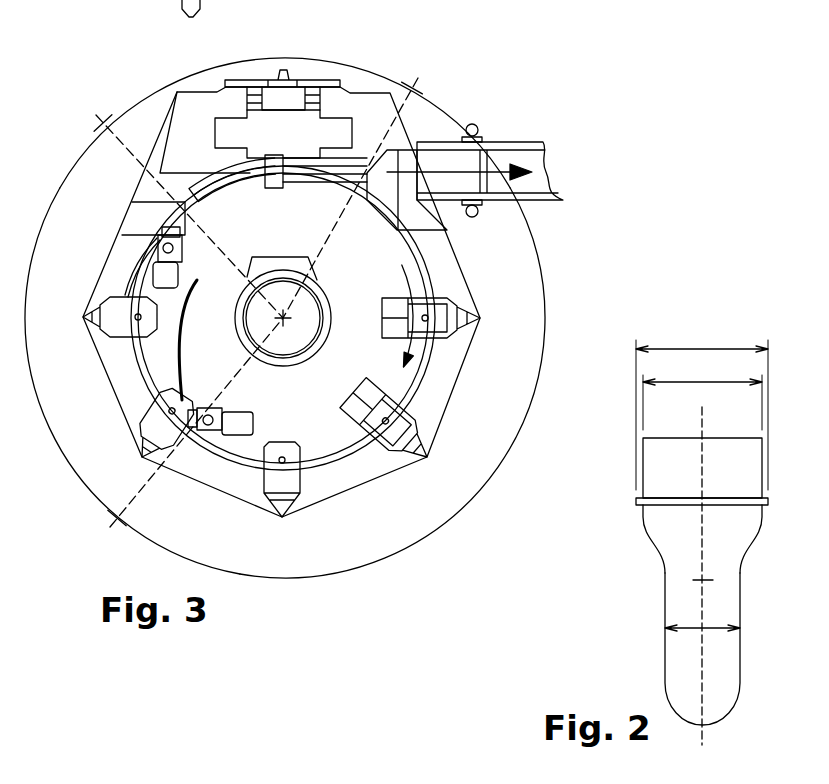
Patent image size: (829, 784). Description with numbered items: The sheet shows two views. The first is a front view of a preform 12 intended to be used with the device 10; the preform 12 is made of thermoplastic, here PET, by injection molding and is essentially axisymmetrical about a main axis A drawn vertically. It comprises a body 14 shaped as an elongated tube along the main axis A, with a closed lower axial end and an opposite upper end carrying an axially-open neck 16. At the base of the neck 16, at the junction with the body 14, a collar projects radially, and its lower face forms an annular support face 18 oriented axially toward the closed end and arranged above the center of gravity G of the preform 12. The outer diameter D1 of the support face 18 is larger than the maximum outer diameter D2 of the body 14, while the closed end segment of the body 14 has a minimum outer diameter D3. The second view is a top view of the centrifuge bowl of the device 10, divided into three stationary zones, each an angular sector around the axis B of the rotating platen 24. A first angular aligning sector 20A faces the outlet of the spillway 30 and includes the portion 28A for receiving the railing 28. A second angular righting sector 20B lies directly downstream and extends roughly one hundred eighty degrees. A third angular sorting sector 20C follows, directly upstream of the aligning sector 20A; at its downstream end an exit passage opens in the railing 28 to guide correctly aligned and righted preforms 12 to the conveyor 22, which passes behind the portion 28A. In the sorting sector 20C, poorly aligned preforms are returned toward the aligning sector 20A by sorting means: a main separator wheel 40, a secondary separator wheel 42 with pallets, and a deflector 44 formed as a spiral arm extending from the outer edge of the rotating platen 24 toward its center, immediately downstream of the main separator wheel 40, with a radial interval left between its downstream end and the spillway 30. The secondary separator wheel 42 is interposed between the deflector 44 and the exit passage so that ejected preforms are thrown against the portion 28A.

In FIG. 3, the device 10 is at (307, 545).
In FIG. 2, the preform 12 is at (628, 561).
In FIG. 2, the body 14 is at (717, 655).
In FIG. 2, the neck 16 is at (667, 467).
In FIG. 3, the annular support face 18 is at (460, 390).
In FIG. 2, the annular support face 18 is at (637, 503).
In FIG. 3, the first angular aligning sector 20A is at (267, 58).
In FIG. 3, the second angular righting sector 20B is at (448, 525).
In FIG. 3, the third angular sorting sector 20C is at (35, 415).
In FIG. 3, the conveyor 22 is at (516, 142).
In FIG. 3, the rotating platen 24 is at (270, 425).
In FIG. 3, the railing 28 is at (347, 458).
In FIG. 3, the portion for receiving the railing 28A is at (292, 200).
In FIG. 3, the spillway 30 is at (300, 260).
In FIG. 3, the main separator wheel 40 is at (228, 398).
In FIG. 3, the secondary separator wheel 42 is at (187, 248).
In FIG. 3, the deflector 44 is at (183, 340).
In FIG. 2, the main axis A is at (702, 427).
In FIG. 3, the axis of the rotating platen B is at (290, 320).
In FIG. 2, the outer diameter of the support face D1 is at (702, 408).
In FIG. 2, the maximum outer diameter of the body D2 is at (702, 395).
In FIG. 2, the minimum outer diameter D3 is at (702, 615).
In FIG. 2, the center of gravity G is at (705, 580).